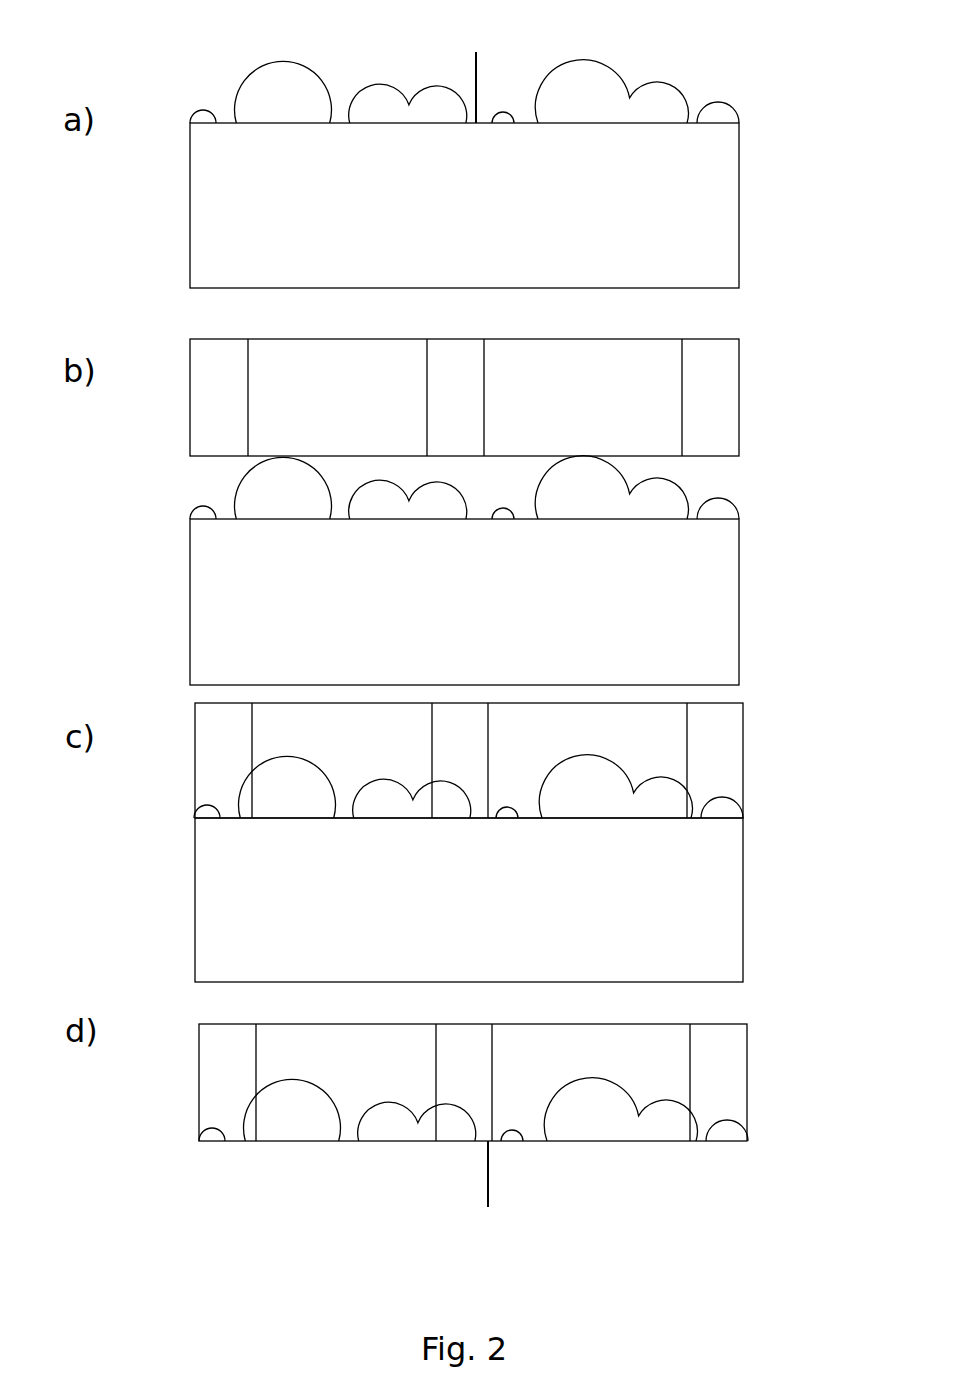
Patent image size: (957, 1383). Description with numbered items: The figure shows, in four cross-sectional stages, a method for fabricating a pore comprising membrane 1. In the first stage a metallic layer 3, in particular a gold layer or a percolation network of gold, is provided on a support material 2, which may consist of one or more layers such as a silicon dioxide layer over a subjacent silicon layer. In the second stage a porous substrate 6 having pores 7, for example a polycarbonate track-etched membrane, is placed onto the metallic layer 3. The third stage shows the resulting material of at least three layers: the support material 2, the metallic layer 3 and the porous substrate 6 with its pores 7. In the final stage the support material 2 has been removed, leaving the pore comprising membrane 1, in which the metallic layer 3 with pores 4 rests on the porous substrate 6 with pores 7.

The pore comprising membrane 1 is at (178, 1081).
The support material 2 is at (739, 246).
The metallic layer 3 is at (726, 111).
The pores 4 is at (479, 635).
The porous substrate 6 is at (739, 437).
The pores 7 is at (719, 368).